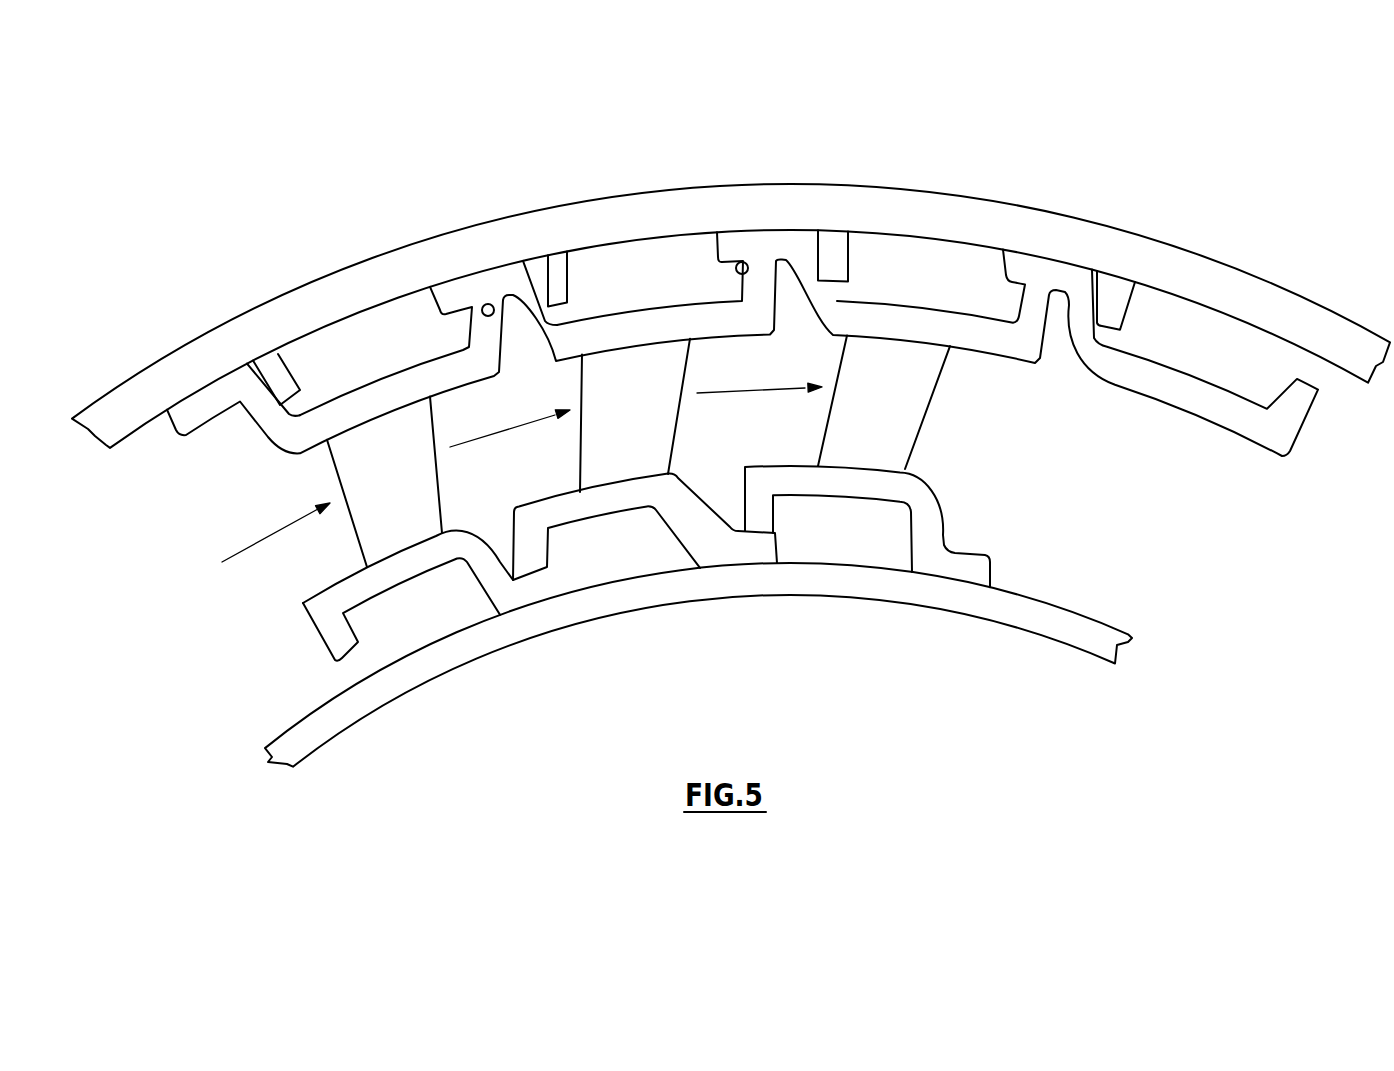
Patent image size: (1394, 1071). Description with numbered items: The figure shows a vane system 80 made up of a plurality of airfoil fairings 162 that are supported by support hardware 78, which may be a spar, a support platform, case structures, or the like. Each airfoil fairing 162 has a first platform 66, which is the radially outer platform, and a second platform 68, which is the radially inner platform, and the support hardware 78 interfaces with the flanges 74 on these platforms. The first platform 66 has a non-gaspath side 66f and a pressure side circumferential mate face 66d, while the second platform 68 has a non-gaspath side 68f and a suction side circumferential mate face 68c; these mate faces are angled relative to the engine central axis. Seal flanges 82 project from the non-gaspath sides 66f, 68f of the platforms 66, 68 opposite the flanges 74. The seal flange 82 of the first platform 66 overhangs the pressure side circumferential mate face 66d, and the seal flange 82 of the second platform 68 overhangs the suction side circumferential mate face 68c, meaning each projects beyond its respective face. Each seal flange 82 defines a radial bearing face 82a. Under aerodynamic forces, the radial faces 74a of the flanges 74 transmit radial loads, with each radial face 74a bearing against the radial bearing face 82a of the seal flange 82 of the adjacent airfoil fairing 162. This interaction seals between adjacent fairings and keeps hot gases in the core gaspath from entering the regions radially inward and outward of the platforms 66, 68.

The first platform 66 is at (485, 367).
The pressure side circumferential mate face 66d is at (547, 350).
The non-gaspath side 66f is at (367, 387).
The second platform 68 is at (397, 573).
The suction side circumferential mate face 68c is at (495, 547).
The non-gaspath side 68f is at (370, 602).
The flange 74 is at (473, 333).
The radial face 74a is at (453, 287).
The support hardware 78 is at (697, 195).
The vane system 80 is at (1087, 190).
The seal flange 82 is at (475, 287).
The radial bearing face 82a is at (505, 340).
The airfoil fairing 162 is at (355, 533).